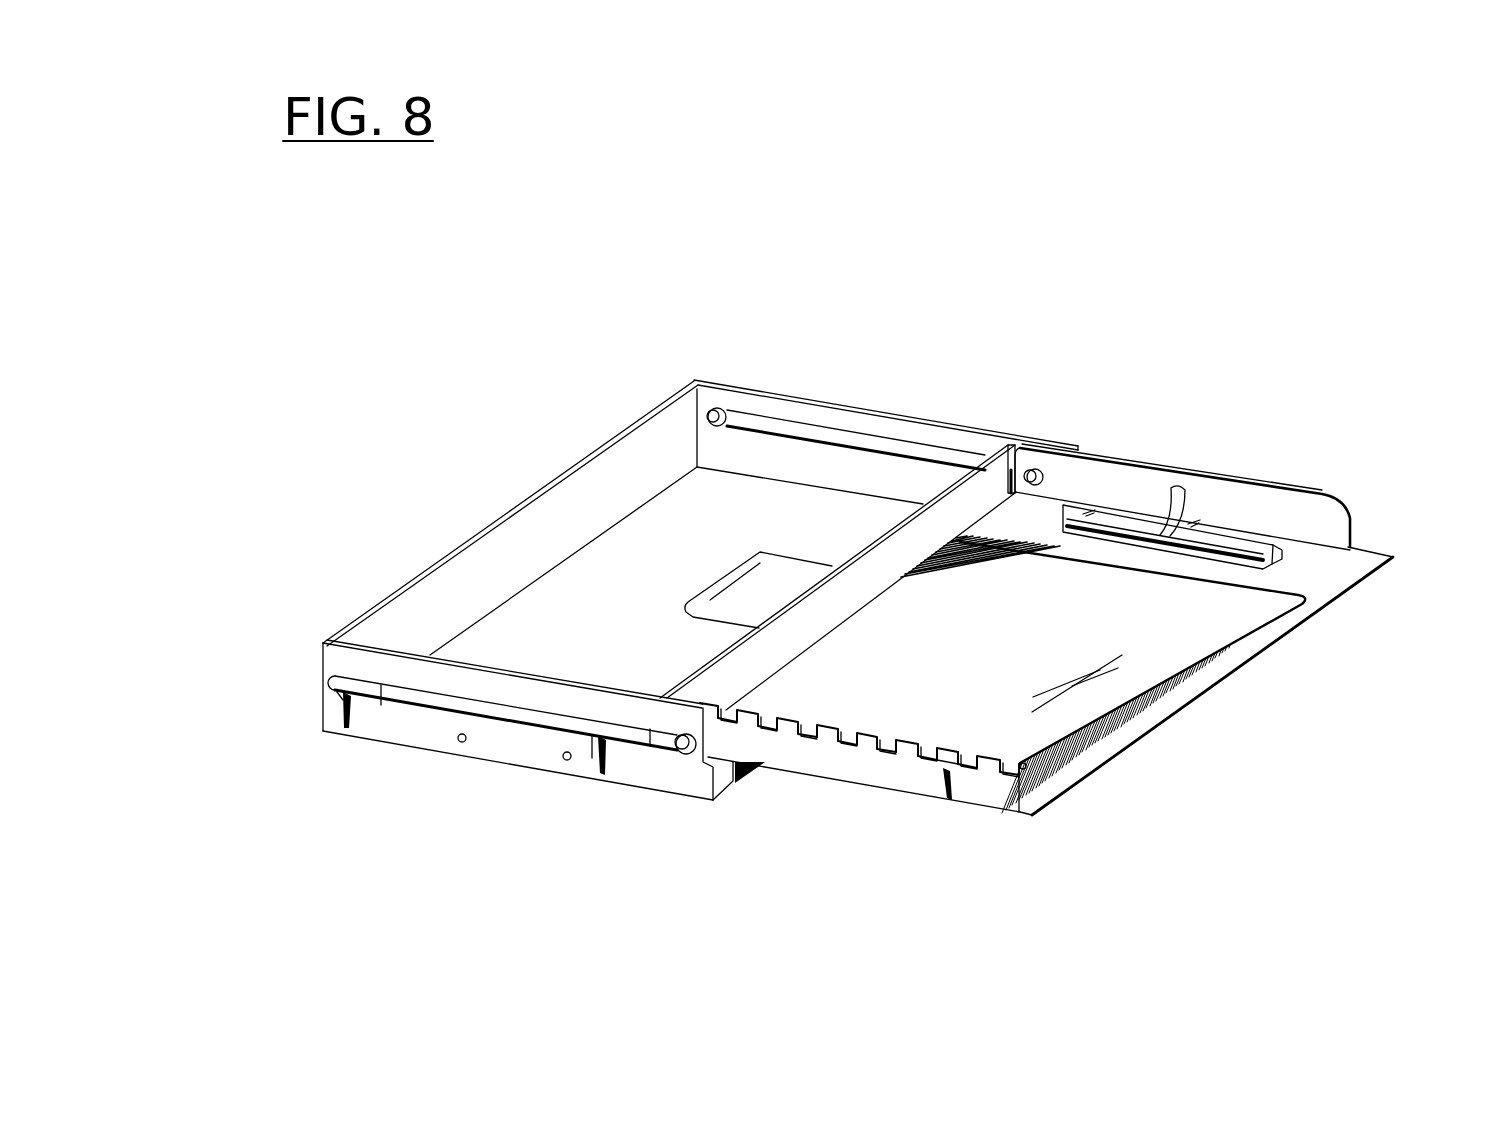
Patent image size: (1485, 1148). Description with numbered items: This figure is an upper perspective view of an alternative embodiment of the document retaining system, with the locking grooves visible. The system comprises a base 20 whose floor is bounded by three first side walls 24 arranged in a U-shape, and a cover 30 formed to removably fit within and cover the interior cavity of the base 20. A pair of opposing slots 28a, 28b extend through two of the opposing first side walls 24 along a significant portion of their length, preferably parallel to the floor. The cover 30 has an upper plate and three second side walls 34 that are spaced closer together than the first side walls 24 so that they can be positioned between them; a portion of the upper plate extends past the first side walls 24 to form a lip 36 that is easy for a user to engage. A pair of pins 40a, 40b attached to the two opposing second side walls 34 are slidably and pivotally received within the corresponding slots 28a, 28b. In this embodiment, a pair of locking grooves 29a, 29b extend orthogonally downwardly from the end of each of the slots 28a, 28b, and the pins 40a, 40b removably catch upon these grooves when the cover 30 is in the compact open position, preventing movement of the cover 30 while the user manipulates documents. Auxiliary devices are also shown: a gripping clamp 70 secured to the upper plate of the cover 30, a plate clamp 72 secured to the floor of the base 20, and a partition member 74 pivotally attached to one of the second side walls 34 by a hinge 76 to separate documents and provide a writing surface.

The base 20 is at (903, 395).
The first side walls 24 is at (473, 562).
The slot 28a is at (380, 692).
The slot 28b is at (828, 446).
The locking groove 29a is at (343, 680).
The locking groove 29b is at (716, 409).
The cover 30 is at (1304, 468).
The second side walls 34 is at (980, 483).
The lip 36 is at (1063, 783).
The pin 40a is at (680, 746).
The pin 40b is at (1021, 460).
The gripping clamp 70 is at (1187, 513).
The plate clamp 72 is at (740, 590).
The partition member 74 is at (1000, 667).
The hinge 76 is at (941, 760).